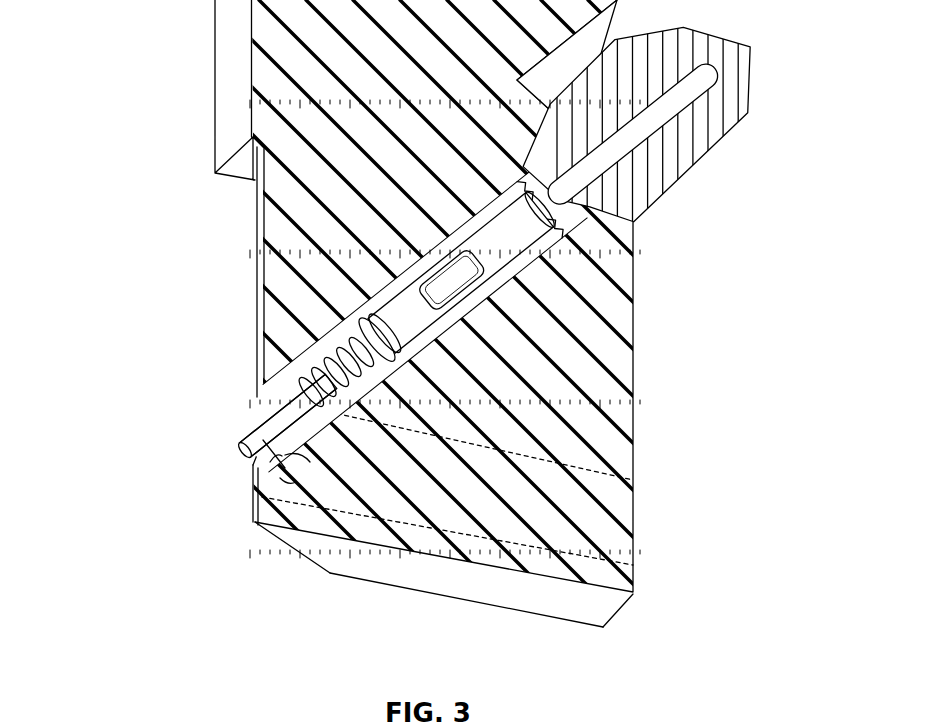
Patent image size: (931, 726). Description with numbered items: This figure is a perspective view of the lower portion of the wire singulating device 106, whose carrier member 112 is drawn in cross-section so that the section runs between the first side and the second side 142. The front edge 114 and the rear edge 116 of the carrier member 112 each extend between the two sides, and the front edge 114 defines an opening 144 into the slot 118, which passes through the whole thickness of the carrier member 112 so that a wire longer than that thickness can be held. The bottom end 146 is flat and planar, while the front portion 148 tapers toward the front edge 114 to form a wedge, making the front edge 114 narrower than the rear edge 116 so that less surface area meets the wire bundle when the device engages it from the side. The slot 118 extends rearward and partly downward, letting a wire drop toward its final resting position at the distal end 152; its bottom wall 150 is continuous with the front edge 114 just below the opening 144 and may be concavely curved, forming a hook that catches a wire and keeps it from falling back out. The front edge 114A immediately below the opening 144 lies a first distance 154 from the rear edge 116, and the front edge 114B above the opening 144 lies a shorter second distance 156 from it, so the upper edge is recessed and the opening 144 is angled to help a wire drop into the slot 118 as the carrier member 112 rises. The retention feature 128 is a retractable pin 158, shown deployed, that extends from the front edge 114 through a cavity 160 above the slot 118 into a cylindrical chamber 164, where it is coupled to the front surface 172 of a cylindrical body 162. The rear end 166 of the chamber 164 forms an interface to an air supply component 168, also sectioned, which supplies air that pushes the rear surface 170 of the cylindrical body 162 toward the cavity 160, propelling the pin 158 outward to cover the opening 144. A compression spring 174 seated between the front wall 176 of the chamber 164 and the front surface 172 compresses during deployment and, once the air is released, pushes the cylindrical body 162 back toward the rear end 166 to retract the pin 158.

The wire singulating device 106 is at (120, 73).
The carrier member 112 is at (325, 124).
The front edge 114 is at (263, 216).
The front edge below the opening 114A is at (255, 500).
The front edge above the opening 114B is at (264, 400).
The rear edge 116 is at (623, 610).
The slot 118 is at (333, 415).
The retention feature 128 is at (232, 445).
The second side 142 is at (480, 605).
The opening 144 is at (245, 468).
The bottom end 146 is at (540, 605).
The front portion 148 is at (290, 548).
The bottom wall 150 is at (282, 468).
The distal end 152 is at (292, 484).
The first distance 154 is at (588, 560).
The second distance 156 is at (580, 447).
The retractable pin 158 is at (254, 441).
The cavity 160 is at (300, 382).
The cylindrical body 162 is at (565, 262).
The cylindrical chamber 164 is at (458, 332).
The rear end 166 is at (634, 201).
The air supply component 168 is at (697, 143).
The rear surface 170 is at (497, 267).
The front surface 172 is at (360, 302).
The compression spring 174 is at (357, 320).
The front wall 176 is at (292, 460).